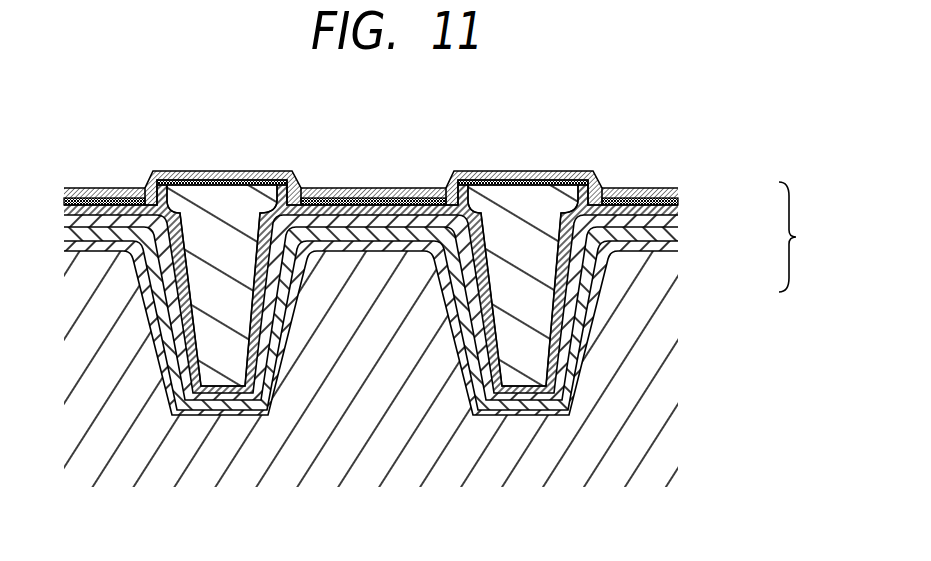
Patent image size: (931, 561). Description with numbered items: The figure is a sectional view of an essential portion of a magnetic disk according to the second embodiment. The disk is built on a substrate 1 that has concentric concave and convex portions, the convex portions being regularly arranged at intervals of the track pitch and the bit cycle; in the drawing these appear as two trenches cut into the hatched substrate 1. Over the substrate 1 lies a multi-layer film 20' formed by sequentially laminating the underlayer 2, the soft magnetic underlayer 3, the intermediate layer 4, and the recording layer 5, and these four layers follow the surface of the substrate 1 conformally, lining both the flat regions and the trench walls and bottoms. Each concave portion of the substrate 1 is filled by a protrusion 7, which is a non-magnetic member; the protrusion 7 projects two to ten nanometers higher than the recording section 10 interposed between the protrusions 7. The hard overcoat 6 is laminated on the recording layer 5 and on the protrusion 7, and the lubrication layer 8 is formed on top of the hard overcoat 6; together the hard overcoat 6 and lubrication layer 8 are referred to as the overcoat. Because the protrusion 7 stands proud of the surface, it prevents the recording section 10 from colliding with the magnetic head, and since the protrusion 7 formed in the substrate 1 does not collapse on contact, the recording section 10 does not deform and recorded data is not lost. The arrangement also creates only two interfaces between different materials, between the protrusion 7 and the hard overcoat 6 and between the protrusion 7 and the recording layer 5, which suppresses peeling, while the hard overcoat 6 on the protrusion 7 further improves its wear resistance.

The substrate 1 is at (663, 483).
The underlayer 2 is at (677, 247).
The soft magnetic underlayer 3 is at (677, 235).
The intermediate layer 4 is at (677, 222).
The recording layer 5 is at (677, 212).
The hard overcoat 6 is at (677, 200).
The protrusion 7 is at (526, 203).
The lubrication layer 8 is at (677, 193).
The recording section 10 is at (378, 190).
The multi-layer film 20' is at (450, 298).